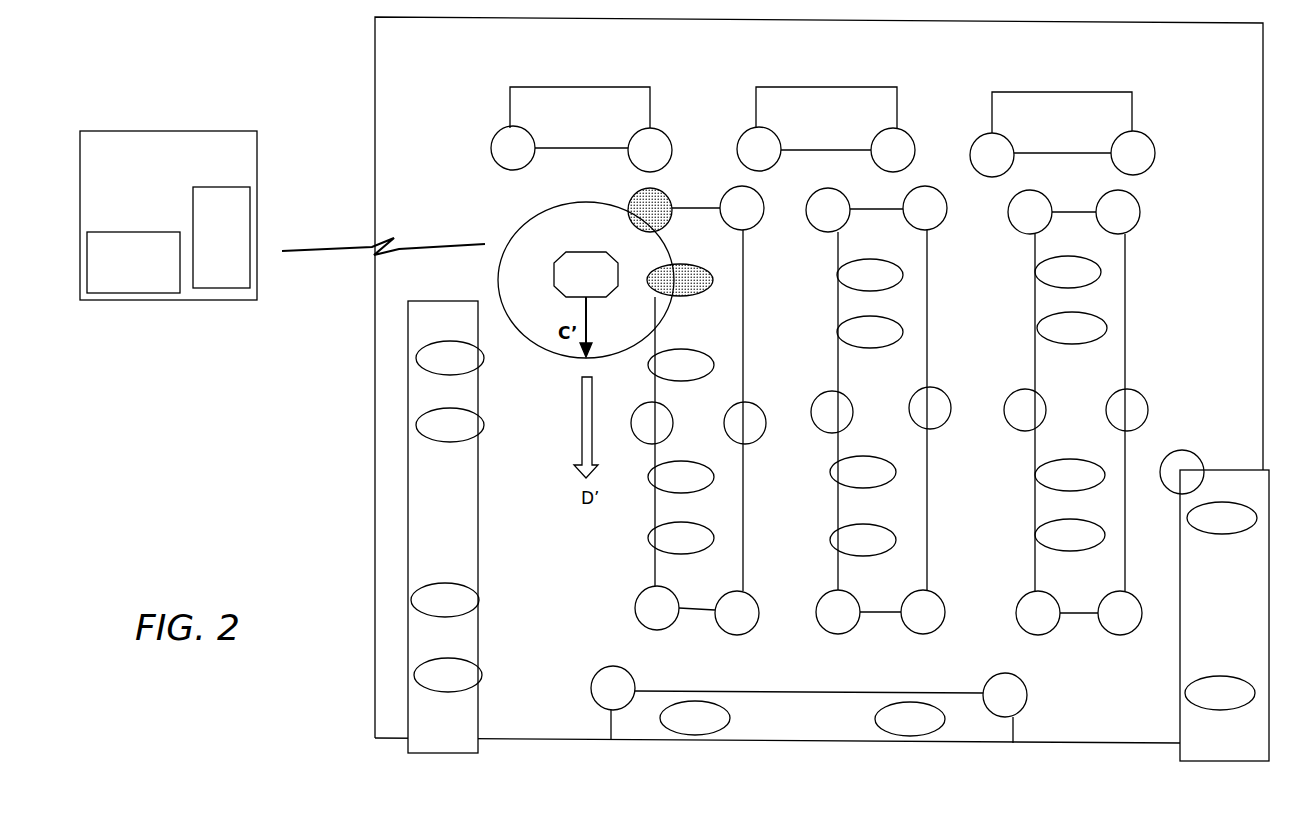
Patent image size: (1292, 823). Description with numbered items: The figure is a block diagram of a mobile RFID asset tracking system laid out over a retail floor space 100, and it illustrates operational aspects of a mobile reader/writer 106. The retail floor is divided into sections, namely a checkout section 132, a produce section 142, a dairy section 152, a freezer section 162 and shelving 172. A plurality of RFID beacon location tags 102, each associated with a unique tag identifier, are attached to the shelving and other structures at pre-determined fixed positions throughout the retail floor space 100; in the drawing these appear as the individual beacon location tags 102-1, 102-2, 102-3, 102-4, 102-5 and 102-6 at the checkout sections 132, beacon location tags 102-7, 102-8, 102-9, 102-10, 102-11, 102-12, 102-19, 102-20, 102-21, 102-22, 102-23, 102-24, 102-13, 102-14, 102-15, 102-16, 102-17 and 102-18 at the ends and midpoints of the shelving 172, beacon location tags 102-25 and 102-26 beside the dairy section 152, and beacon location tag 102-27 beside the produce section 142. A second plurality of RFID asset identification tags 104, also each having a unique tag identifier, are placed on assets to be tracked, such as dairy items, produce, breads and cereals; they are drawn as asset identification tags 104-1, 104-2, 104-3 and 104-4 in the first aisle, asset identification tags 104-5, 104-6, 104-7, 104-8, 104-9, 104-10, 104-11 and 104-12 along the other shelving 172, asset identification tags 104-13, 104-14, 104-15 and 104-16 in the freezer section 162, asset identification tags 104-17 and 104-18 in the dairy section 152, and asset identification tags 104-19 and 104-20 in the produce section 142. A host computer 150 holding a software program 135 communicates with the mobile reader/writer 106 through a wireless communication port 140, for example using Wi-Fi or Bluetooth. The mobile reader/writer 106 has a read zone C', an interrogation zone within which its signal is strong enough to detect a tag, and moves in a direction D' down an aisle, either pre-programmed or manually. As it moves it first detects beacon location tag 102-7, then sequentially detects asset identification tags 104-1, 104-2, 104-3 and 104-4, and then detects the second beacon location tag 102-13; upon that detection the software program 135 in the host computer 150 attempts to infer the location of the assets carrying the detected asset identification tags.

The retail floor space 100 is at (819, 380).
The RFID beacon location tags 102 is at (847, 421).
The wireless access point 102-1 is at (513, 148).
The wireless access point 102-2 is at (650, 150).
The wireless access point 102-3 is at (759, 149).
The wireless access point 102-4 is at (893, 150).
The wireless access point 102-5 is at (992, 155).
The wireless access point 102-6 is at (1133, 153).
The first RFID beacon location tag 102-7 is at (650, 210).
The wireless access point 102-8 is at (742, 208).
The wireless access point 102-9 is at (828, 210).
The wireless access point 102-10 is at (925, 208).
The wireless access point 102-11 is at (1030, 212).
The wireless access point 102-12 is at (1118, 212).
The second beacon location tag 102-13 is at (657, 608).
The wireless access point 102-14 is at (737, 613).
The wireless access point 102-15 is at (838, 612).
The wireless access point 102-16 is at (923, 612).
The wireless access point 102-17 is at (1038, 613).
The wireless access point 102-18 is at (1120, 613).
The wireless access point 102-19 is at (652, 423).
The wireless access point 102-20 is at (745, 423).
The wireless access point 102-21 is at (832, 412).
The wireless access point 102-22 is at (930, 408).
The wireless access point 102-23 is at (1025, 410).
The wireless access point 102-24 is at (1127, 410).
The wireless access point 102-25 is at (613, 688).
The wireless access point 102-26 is at (1005, 695).
The wireless access point 102-27 is at (1182, 472).
The RFID asset identification tags 104 is at (834, 496).
The asset identification tag 104-1 is at (680, 280).
The asset identification tag 104-2 is at (681, 365).
The asset identification tag 104-3 is at (681, 477).
The asset identification tag 104-4 is at (681, 538).
The tag 104-5 is at (870, 275).
The tag 104-6 is at (870, 332).
The tag 104-7 is at (863, 472).
The tag 104-8 is at (863, 540).
The tag 104-9 is at (1068, 272).
The tag 104-10 is at (1072, 328).
The tag 104-11 is at (1070, 475).
The tag 104-12 is at (1070, 535).
The tag 104-13 is at (450, 358).
The tag 104-14 is at (450, 425).
The tag 104-15 is at (445, 600).
The tag 104-16 is at (448, 675).
The tag 104-17 is at (695, 718).
The tag 104-18 is at (910, 719).
The tag 104-19 is at (1222, 518).
The tag 104-20 is at (1220, 693).
The mobile reader/writer 106 is at (586, 274).
The checkout section 132 is at (821, 120).
The software program 135 is at (133, 262).
The wireless communication port 140 is at (221, 237).
The produce section 142 is at (1224, 615).
The host computer 150 is at (168, 215).
The dairy section 152 is at (812, 717).
The freezer section 162 is at (443, 527).
The shelving 172 is at (890, 410).